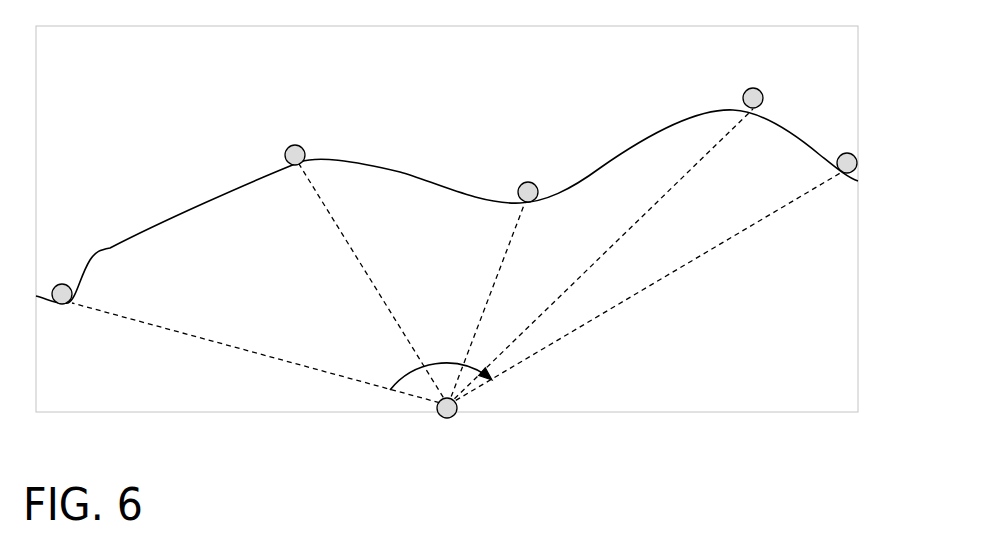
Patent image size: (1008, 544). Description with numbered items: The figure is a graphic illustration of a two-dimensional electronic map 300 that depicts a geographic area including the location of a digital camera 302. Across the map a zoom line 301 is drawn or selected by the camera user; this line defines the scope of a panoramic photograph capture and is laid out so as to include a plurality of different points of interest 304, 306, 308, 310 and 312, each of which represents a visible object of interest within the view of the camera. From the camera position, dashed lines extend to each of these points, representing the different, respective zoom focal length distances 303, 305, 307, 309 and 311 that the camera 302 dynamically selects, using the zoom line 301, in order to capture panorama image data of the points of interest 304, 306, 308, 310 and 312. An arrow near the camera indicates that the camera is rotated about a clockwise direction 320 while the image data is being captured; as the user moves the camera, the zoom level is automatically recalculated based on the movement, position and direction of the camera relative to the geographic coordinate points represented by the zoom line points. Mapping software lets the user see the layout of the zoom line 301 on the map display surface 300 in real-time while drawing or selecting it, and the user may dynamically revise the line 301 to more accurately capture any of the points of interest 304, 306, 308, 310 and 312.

The two-dimensional electronic map 300 is at (268, 413).
The zoom line 301 is at (217, 200).
The digital camera 302 is at (447, 419).
The zoom focal length distance 303 is at (173, 331).
The point of interest 304 is at (63, 282).
The zoom focal length distance 305 is at (366, 275).
The point of interest 306 is at (287, 146).
The zoom focal length distance 307 is at (502, 277).
The point of interest 308 is at (528, 179).
The zoom focal length distance 309 is at (605, 252).
The point of interest 310 is at (751, 86).
The zoom focal length distance 311 is at (705, 253).
The point of interest 312 is at (853, 153).
The clockwise direction 320 is at (453, 360).